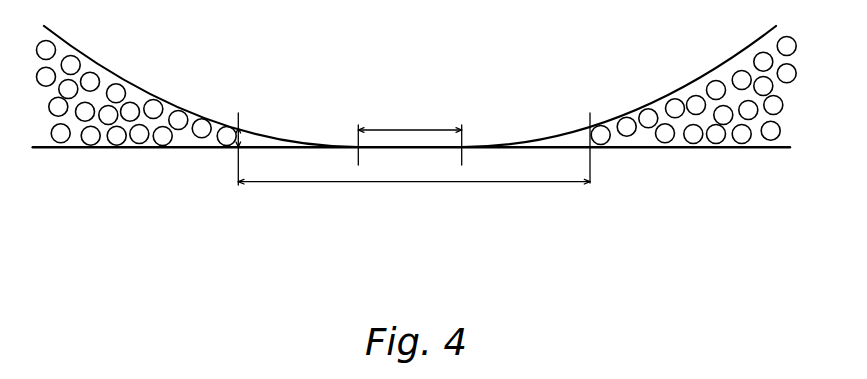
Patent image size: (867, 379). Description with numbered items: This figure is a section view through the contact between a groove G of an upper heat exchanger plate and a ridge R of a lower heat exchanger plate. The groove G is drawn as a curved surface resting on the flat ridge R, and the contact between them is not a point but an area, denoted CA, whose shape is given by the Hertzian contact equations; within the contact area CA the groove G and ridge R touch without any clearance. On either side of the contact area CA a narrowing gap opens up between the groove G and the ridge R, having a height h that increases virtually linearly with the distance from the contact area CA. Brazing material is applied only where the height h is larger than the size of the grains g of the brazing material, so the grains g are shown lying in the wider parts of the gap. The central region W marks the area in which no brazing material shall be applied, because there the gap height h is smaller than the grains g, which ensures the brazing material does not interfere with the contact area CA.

The groove G is at (702, 77).
The ridge R is at (658, 149).
The grains g is at (120, 138).
The height h is at (240, 127).
The contact area CA is at (409, 136).
The area in which no brazing material shall be applied W is at (414, 157).